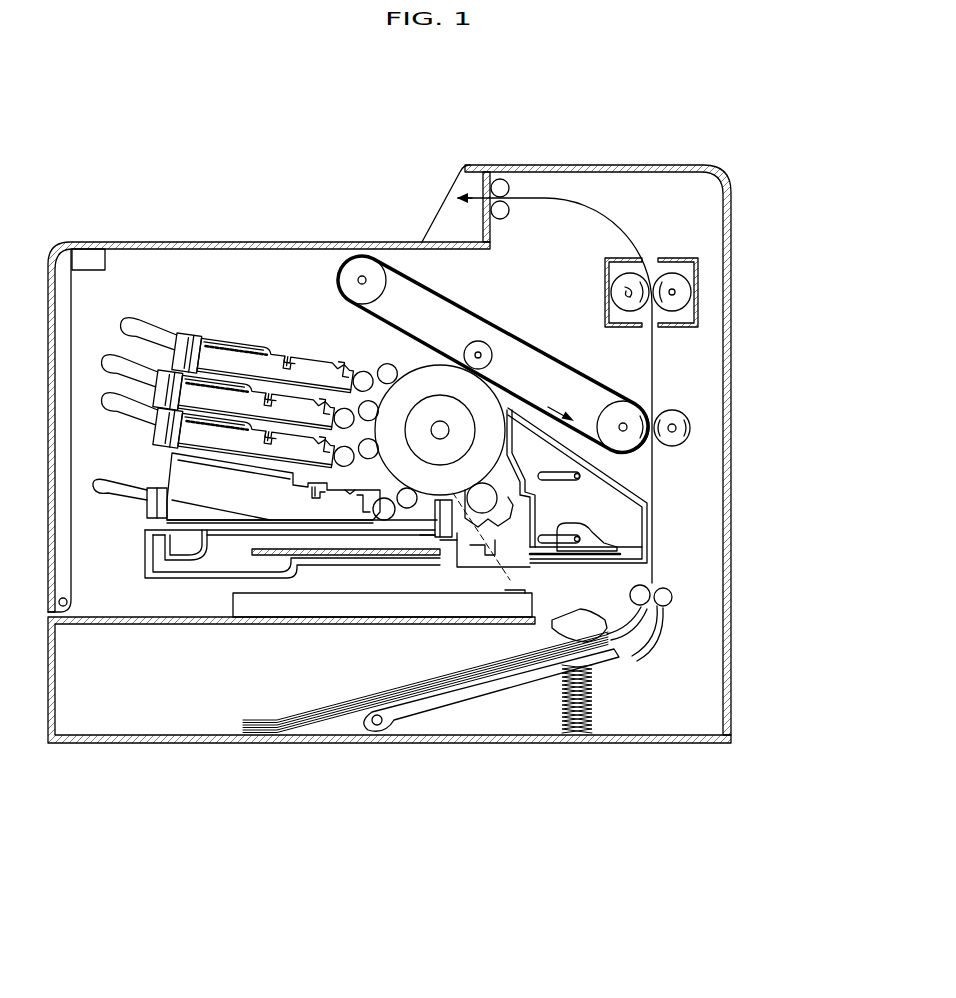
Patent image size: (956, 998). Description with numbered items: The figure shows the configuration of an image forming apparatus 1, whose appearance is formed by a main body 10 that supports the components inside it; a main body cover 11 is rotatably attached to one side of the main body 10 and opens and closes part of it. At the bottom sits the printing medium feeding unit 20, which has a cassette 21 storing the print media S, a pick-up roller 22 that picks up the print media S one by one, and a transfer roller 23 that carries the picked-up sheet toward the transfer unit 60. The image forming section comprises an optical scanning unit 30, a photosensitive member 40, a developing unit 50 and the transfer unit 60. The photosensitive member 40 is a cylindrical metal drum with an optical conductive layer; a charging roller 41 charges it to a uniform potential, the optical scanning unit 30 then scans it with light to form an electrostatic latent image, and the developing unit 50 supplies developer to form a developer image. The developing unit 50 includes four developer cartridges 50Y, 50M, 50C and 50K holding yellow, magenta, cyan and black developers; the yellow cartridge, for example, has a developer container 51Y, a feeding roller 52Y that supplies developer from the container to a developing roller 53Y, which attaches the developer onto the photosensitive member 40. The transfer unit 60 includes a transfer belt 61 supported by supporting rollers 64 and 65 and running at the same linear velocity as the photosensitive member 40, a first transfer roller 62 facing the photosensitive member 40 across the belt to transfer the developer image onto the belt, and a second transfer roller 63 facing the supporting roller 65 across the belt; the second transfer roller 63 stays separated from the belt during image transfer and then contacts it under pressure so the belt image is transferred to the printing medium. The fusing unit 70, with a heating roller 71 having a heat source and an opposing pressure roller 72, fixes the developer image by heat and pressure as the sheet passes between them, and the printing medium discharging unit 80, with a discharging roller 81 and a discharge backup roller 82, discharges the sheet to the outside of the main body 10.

The image forming apparatus 1 is at (772, 172).
The main body 10 is at (702, 166).
The main body cover 11 is at (54, 362).
The printing medium feeding unit 20 is at (300, 752).
The cassette 21 is at (128, 748).
The pick-up roller 22 is at (563, 632).
The transfer roller 23 is at (668, 588).
The optical scanning unit 30 is at (232, 607).
The photosensitive member 40 is at (420, 372).
The charging roller 41 is at (487, 498).
The developing unit 50 is at (256, 318).
The developer cartridge 50Y is at (178, 332).
The developer cartridge 50M is at (158, 385).
The developer cartridge 50C is at (158, 432).
The developer cartridge 50K is at (148, 507).
The developer container 51Y is at (215, 348).
The feeding roller 52Y is at (338, 362).
The developing roller 53Y is at (370, 362).
The transfer unit 60 is at (526, 328).
The transfer belt 61 is at (538, 352).
The first transfer roller 62 is at (483, 343).
The second transfer roller 63 is at (692, 428).
The supporting roller 64 is at (380, 272).
The supporting roller 65 is at (604, 392).
The fusing unit 70 is at (704, 282).
The heating roller 71 is at (620, 274).
The pressure roller 72 is at (673, 306).
The printing medium discharging unit 80 is at (512, 186).
The discharging roller 81 is at (496, 184).
The discharge backup roller 82 is at (503, 216).
The print media S is at (294, 714).